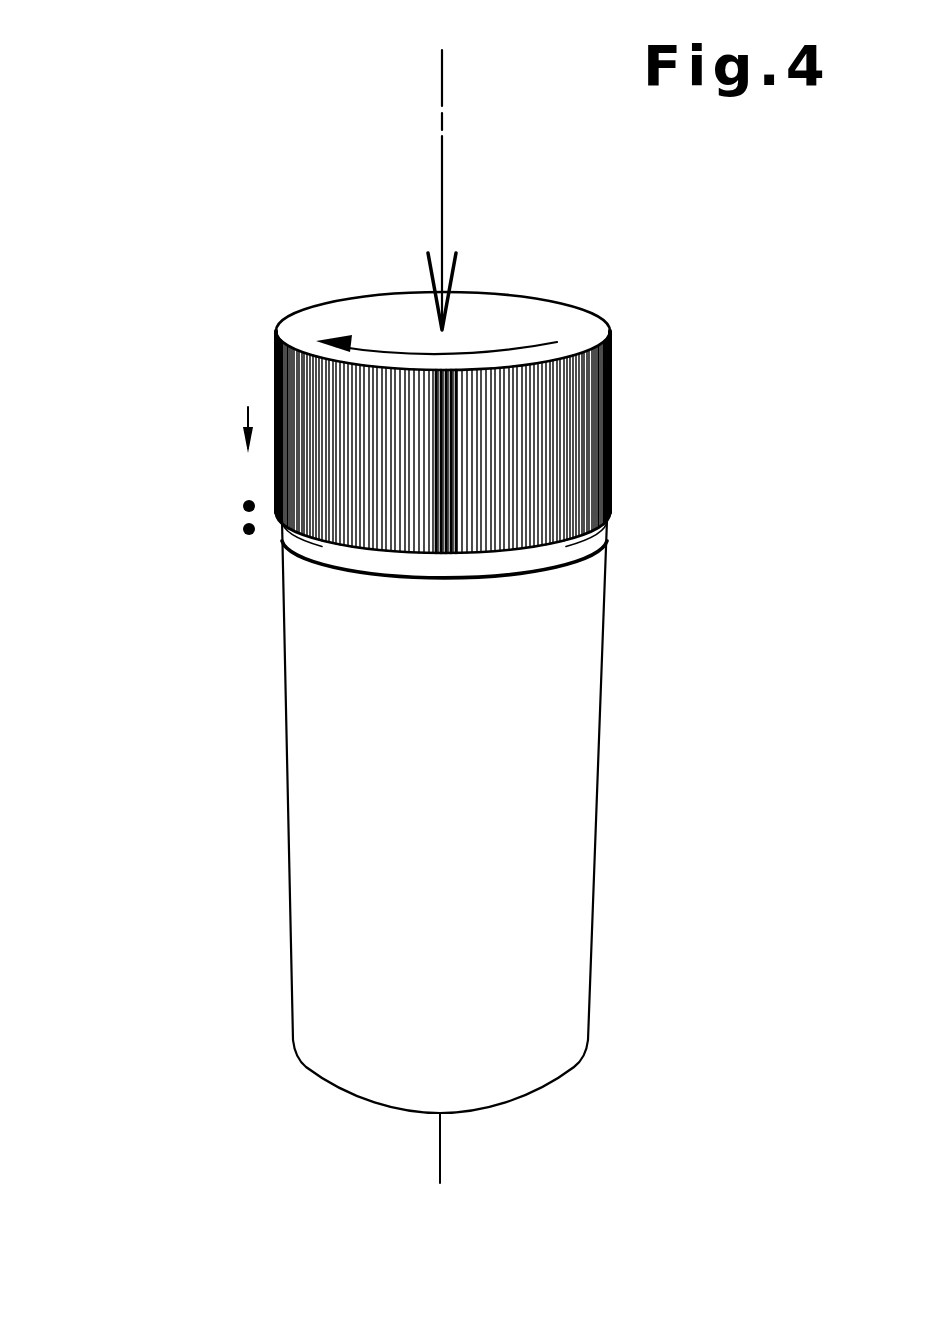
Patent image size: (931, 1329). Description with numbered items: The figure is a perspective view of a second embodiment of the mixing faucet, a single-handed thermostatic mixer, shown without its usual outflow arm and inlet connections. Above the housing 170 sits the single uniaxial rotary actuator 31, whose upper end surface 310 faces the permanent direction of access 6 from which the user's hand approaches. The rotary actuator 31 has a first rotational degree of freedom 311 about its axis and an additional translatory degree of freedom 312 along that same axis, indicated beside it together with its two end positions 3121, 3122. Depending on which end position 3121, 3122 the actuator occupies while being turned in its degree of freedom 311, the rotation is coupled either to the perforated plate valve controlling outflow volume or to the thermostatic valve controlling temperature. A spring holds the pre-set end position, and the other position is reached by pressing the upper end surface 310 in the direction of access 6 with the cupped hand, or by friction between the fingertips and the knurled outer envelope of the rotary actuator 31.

The direction of access 6 is at (442, 195).
The rotary actuator 31 is at (549, 370).
The upper end surface 310 is at (483, 318).
The first rotational degree of freedom 311 is at (612, 354).
The translatory degree of freedom 312 is at (247, 418).
The end position 3121 is at (242, 509).
The end position 3122 is at (246, 534).
The housing 170 is at (360, 913).